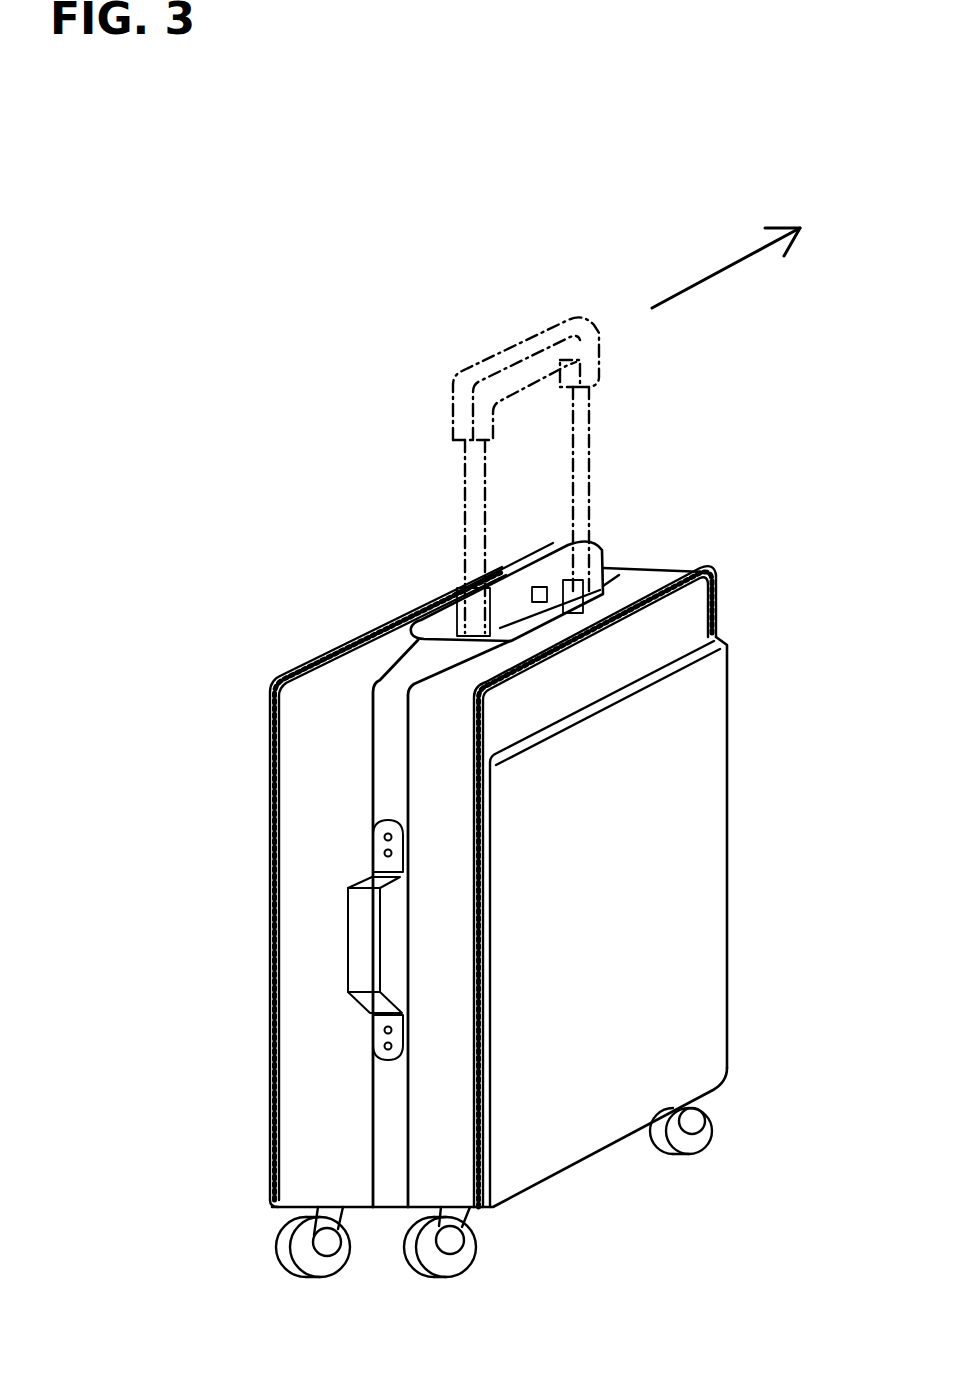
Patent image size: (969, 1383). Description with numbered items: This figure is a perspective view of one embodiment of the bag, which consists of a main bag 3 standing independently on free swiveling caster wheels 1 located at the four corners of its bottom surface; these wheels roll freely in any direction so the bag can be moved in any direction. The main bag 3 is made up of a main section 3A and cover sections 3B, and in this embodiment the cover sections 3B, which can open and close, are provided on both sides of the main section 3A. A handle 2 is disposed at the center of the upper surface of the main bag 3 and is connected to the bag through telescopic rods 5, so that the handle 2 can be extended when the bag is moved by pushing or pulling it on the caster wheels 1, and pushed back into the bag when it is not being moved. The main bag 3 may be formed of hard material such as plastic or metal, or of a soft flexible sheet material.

The free swiveling caster wheel 1 is at (282, 1282).
The handle 2 is at (562, 565).
The main bag 3 is at (818, 605).
The main section 3A is at (660, 563).
The cover section 3B is at (267, 817).
The telescopic rod 5 is at (460, 515).